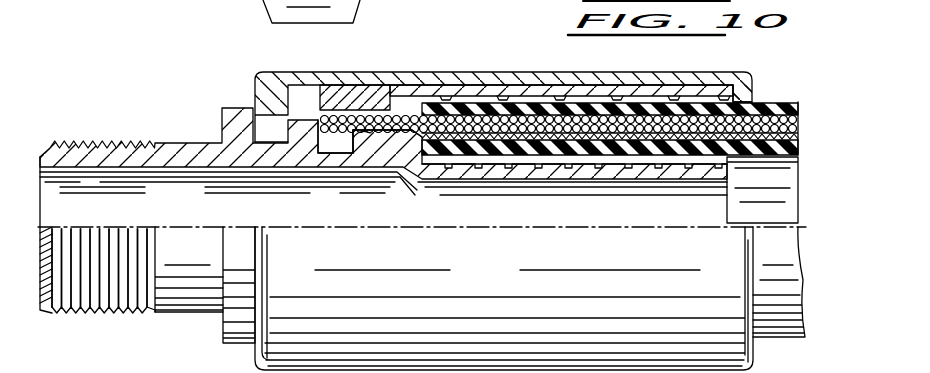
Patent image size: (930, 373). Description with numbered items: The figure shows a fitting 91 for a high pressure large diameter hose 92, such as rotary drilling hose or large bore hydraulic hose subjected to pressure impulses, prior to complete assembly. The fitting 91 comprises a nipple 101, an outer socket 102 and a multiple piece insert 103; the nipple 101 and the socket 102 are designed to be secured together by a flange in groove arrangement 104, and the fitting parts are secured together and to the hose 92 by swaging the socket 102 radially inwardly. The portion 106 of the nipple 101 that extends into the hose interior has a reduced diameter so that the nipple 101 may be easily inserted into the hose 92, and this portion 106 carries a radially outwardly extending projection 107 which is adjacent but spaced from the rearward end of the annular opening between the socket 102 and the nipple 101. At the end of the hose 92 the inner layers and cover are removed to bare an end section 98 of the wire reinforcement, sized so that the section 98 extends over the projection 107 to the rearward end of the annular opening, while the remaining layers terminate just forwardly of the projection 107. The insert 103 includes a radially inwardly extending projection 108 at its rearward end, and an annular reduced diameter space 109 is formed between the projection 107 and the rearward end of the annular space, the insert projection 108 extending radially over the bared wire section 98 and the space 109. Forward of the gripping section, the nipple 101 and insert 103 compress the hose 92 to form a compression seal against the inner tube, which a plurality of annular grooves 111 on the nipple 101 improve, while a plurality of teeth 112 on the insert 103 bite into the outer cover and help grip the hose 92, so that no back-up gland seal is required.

The fitting 91 is at (236, 102).
The hose 92 is at (772, 98).
The bared end section of wire reinforcement 98 is at (408, 118).
The nipple 101 is at (162, 134).
The outer socket 102 is at (730, 54).
The multiple piece insert 103 is at (630, 90).
The flange in groove arrangement 104 is at (263, 69).
The reduced diameter portion of the nipple 106 is at (535, 178).
The radially outwardly extending projection 107 is at (363, 133).
The radially inwardly extending projection 108 is at (344, 104).
The annular reduced diameter space 109 is at (343, 145).
The annular grooves 111 is at (628, 168).
The teeth 112 is at (606, 100).